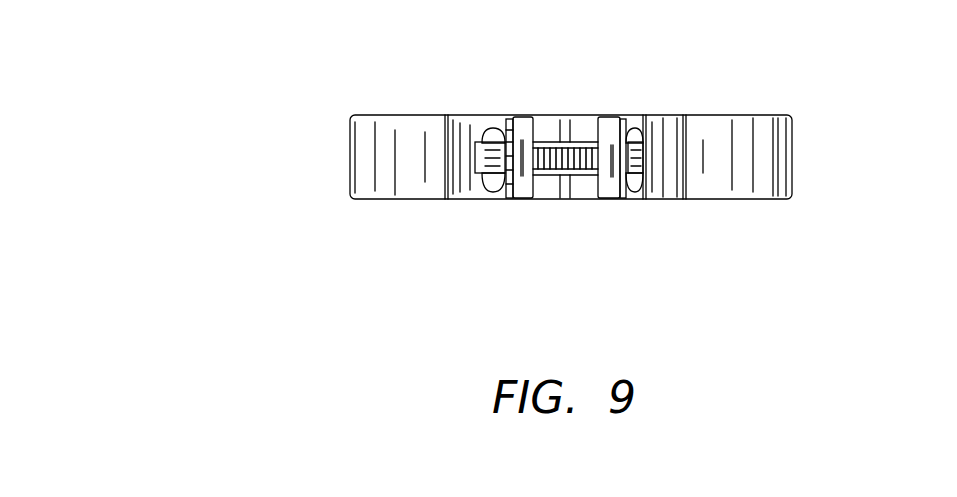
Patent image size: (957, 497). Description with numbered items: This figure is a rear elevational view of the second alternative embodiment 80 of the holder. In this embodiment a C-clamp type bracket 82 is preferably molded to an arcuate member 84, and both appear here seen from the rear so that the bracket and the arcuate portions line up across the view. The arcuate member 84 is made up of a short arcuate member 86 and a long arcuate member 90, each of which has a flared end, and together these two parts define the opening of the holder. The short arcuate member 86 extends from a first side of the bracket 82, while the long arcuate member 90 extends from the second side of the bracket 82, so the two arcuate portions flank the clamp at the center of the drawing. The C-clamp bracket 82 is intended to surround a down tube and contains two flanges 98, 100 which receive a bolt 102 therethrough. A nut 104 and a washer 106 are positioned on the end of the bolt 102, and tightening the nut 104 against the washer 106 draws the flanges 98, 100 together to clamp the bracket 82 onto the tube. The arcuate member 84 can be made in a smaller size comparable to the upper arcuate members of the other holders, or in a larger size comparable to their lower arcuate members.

The second alternative embodiment 80 is at (312, 112).
The C-clamp type bracket 82 is at (668, 184).
The arcuate member 84 is at (826, 117).
The short arcuate member 86 is at (360, 155).
The long arcuate member 90 is at (780, 152).
The flange 98 is at (521, 198).
The flange 100 is at (607, 198).
The bolt 102 is at (640, 130).
The nut 104 is at (488, 128).
The washer 106 is at (506, 125).